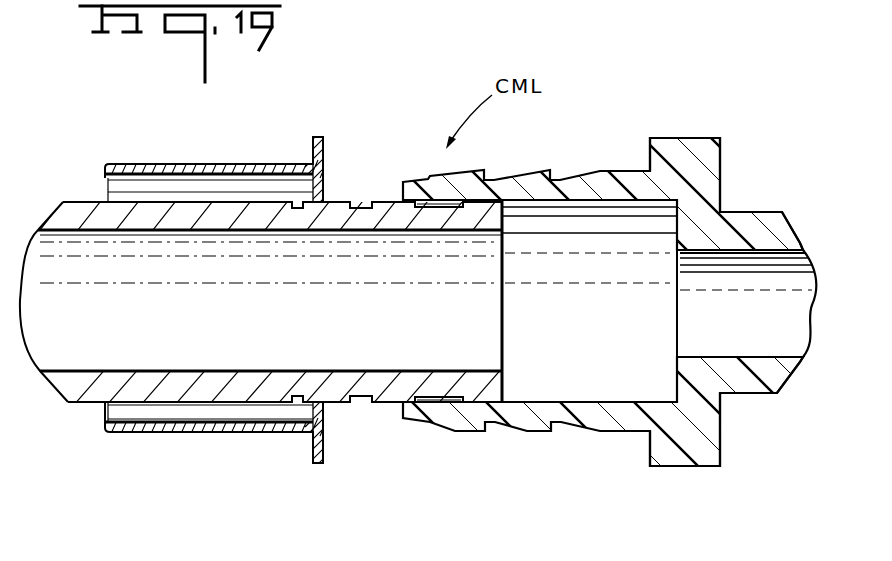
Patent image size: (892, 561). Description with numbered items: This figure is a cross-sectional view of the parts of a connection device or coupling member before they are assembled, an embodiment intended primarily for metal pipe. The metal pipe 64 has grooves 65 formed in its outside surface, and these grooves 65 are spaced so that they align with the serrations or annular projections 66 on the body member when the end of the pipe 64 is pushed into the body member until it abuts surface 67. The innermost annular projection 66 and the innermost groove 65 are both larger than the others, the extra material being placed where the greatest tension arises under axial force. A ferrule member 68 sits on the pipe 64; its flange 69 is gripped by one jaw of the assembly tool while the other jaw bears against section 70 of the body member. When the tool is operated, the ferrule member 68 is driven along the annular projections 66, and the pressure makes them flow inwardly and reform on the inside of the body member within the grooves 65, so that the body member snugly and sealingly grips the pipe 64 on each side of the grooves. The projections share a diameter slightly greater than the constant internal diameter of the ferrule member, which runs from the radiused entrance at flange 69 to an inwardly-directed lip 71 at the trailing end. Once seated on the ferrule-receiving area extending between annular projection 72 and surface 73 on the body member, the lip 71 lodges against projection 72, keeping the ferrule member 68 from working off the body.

The metal pipe 64 is at (87, 393).
The grooves 65 is at (359, 202).
The annular projections 66 is at (600, 172).
The surface 67 is at (677, 243).
The ferrule member 68 is at (208, 164).
The flange 69 is at (313, 446).
The section 70 is at (722, 152).
The inwardly-directed lip 71 is at (102, 189).
The annular projection 72 is at (413, 423).
The surface 73 is at (650, 148).